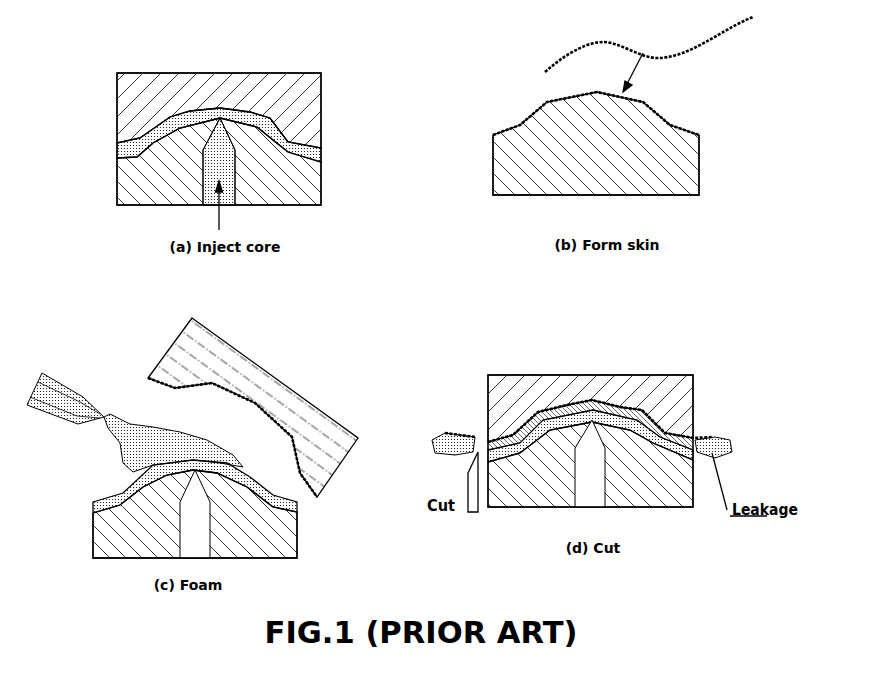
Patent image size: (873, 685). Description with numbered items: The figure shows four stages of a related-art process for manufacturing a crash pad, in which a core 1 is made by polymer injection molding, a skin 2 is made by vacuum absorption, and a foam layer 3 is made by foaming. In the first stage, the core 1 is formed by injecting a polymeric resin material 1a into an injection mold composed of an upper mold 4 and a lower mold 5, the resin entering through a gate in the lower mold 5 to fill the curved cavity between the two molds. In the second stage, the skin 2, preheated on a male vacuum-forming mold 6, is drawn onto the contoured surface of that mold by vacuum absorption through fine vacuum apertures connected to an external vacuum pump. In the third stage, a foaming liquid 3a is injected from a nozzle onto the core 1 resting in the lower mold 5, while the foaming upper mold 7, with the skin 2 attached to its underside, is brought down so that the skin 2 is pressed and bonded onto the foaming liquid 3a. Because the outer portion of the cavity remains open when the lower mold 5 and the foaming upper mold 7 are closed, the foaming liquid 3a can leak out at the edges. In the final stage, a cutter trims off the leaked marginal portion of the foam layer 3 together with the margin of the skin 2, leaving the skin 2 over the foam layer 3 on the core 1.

The core 1 is at (230, 108).
The polymeric resin material 1a is at (230, 170).
The skin 2 is at (570, 52).
The foam layer 3 is at (620, 412).
The foaming liquid 3a is at (125, 452).
The upper mold 4 is at (130, 118).
The lower mold 5 is at (135, 188).
The male vacuum-forming mold 6 is at (682, 162).
The foaming upper mold 7 is at (178, 350).